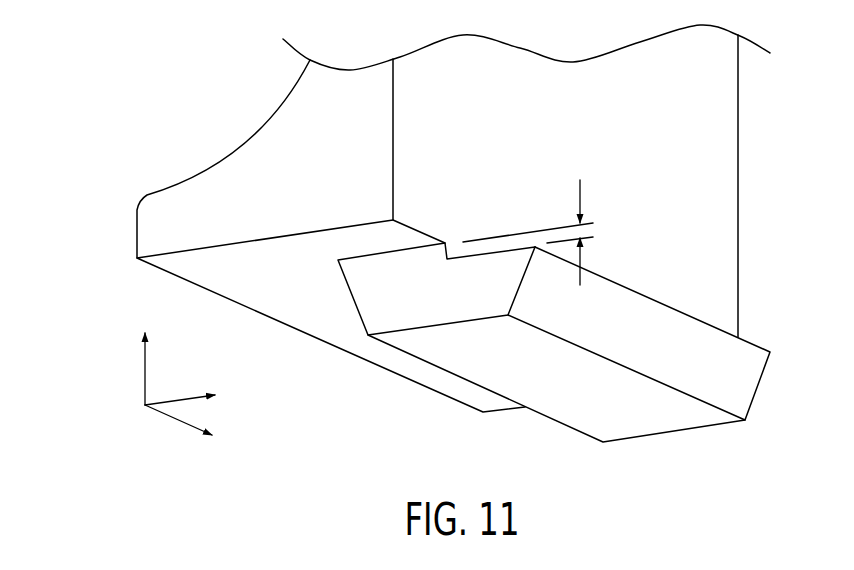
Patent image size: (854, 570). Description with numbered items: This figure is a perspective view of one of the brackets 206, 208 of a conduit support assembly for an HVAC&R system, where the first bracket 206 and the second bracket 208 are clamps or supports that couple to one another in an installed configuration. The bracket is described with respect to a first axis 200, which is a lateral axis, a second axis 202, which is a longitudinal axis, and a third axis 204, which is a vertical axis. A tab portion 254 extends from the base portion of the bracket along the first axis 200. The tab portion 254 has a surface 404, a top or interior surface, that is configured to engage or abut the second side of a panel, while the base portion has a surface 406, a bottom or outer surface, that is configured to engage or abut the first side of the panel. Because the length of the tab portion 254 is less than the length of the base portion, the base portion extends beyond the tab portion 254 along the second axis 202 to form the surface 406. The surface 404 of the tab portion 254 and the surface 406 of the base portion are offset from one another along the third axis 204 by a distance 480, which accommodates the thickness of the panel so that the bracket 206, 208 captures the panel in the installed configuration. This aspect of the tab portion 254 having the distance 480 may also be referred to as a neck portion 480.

The first bracket 206 is at (404, 181).
The second bracket 208 is at (186, 134).
The surface of the base portion 406 is at (279, 308).
The distance 480 is at (581, 190).
The tab portion 254 is at (369, 308).
The surface of the tab portion 404 is at (707, 322).
The first axis 200 is at (175, 398).
The second axis 202 is at (168, 418).
The third axis 204 is at (145, 373).